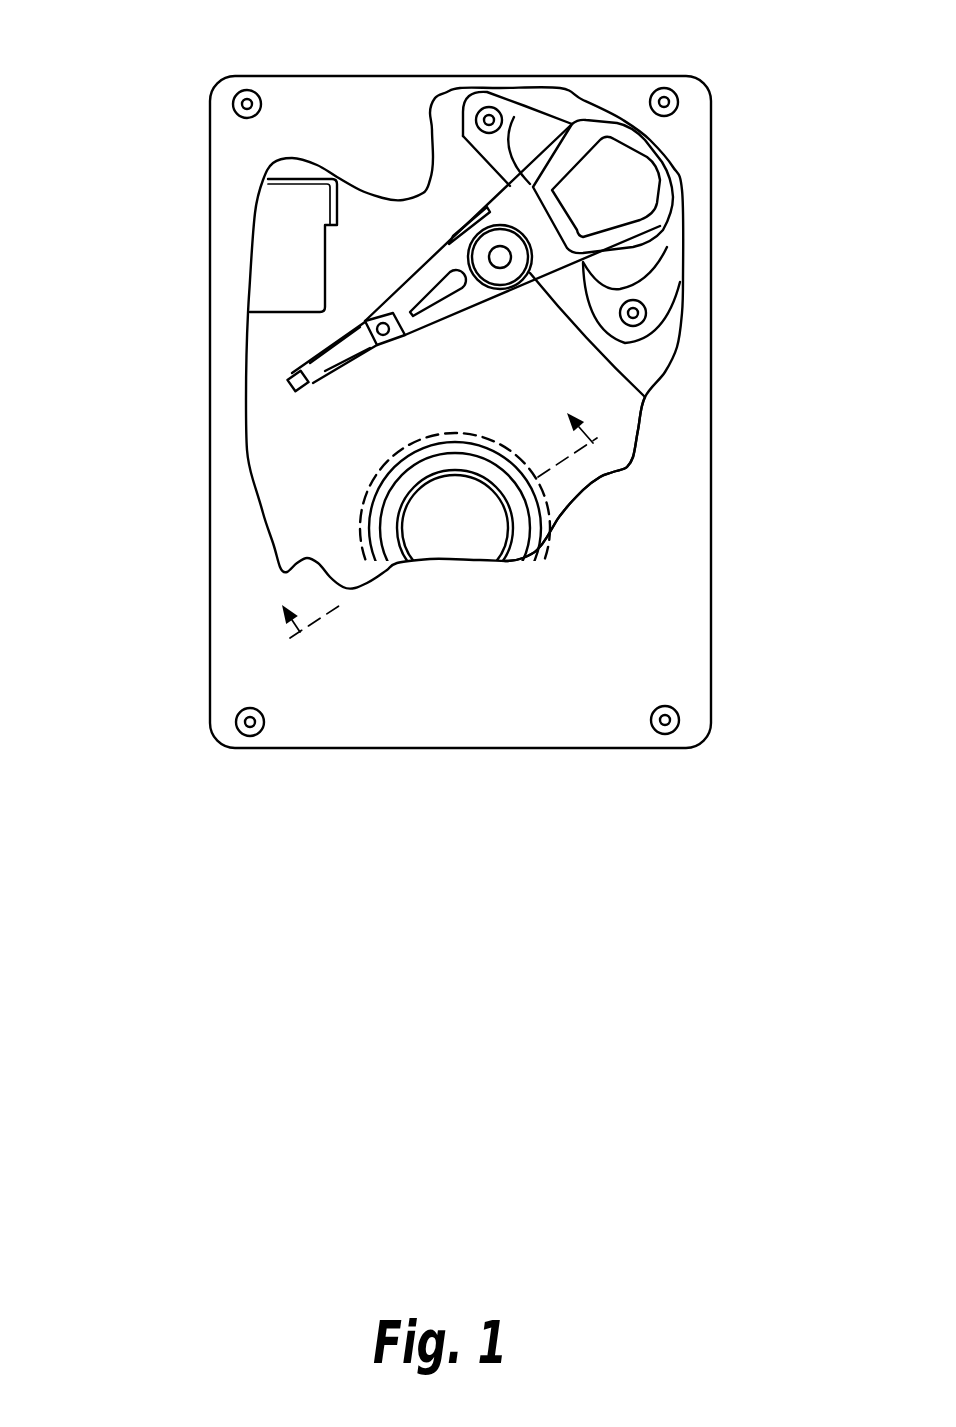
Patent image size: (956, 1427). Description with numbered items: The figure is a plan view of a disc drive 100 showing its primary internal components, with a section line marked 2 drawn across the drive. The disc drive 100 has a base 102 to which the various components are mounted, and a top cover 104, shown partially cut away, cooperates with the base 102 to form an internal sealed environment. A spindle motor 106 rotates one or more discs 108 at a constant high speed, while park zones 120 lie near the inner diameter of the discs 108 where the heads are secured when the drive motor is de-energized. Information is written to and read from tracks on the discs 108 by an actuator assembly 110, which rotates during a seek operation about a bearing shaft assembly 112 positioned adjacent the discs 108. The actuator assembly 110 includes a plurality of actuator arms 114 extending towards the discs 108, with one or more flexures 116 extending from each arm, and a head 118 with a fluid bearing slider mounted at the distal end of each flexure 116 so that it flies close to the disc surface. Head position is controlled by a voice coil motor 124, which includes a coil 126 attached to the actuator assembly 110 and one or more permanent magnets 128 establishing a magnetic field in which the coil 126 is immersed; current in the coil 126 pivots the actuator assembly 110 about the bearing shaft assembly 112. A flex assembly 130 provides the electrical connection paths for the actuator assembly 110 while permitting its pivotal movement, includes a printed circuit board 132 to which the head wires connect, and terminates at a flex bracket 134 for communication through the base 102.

The disc drive 100 is at (441, 377).
The base 102 is at (260, 328).
The top cover 104 is at (263, 632).
The spindle motor 106 is at (453, 530).
The disc 108 is at (587, 465).
The actuator assembly 110 is at (562, 293).
The bearing shaft assembly 112 is at (500, 257).
The actuator arm 114 is at (443, 321).
The flexure 116 is at (320, 368).
The head 118 is at (302, 385).
The park zone 120 is at (352, 533).
The voice coil motor 124 is at (560, 201).
The coil 126 is at (663, 187).
The permanent magnet 128 is at (522, 142).
The flex assembly 130 is at (420, 263).
The printed circuit board 132 is at (462, 212).
The flex bracket 134 is at (282, 238).
The section line 2- 2 is at (452, 545).